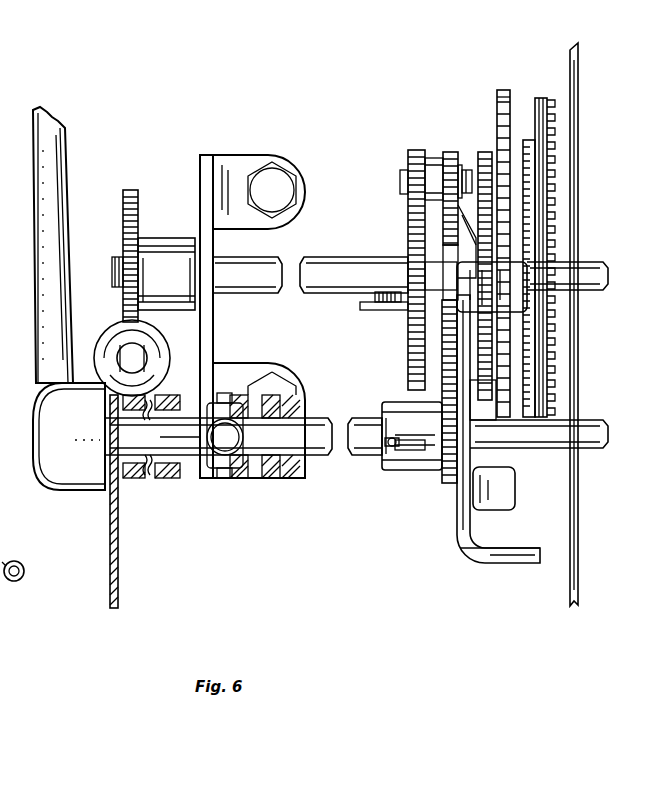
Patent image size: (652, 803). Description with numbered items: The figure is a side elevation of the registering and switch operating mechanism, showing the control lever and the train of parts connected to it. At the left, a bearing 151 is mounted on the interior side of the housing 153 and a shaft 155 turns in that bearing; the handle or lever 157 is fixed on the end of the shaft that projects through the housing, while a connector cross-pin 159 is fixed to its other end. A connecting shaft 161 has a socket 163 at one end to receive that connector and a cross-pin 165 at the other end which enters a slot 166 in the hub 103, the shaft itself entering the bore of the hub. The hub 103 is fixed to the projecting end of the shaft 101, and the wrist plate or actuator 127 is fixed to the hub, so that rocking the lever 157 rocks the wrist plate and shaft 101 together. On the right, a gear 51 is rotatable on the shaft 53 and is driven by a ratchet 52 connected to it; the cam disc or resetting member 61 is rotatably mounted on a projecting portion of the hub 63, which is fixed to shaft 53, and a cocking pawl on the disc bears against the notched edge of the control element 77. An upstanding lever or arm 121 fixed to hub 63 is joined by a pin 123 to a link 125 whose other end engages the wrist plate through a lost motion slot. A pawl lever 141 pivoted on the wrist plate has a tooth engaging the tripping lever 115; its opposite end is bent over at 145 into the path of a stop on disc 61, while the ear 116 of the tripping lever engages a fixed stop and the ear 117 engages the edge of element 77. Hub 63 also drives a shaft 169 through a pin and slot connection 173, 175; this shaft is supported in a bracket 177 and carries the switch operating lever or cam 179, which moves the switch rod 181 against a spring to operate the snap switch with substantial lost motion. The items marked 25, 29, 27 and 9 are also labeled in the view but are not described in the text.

The handle or lever 157 is at (67, 184).
The switch operating lever or cam 179 is at (141, 205).
The bracket 177 is at (235, 155).
The switch rod 181 is at (130, 355).
The shaft 169 is at (273, 262).
The hub 63 is at (370, 262).
The slot 175 is at (375, 297).
The pin 173 is at (378, 310).
The pin 123 is at (404, 182).
The link 125 is at (408, 207).
The wrist plate or actuator 127 is at (435, 315).
The pawl lever 141 is at (441, 328).
The upstanding lever or arm 121 is at (465, 220).
The bent-over end of pawl lever 145 is at (530, 262).
The shaft 53 is at (580, 270).
The control element 77 is at (484, 146).
The cam disc or resetting member 61 is at (502, 81).
The gear 51 is at (556, 112).
The ratchet 52 is at (537, 158).
The frame plate 25 is at (572, 418).
The shaft 101 is at (584, 449).
The hub 103 is at (406, 402).
The connecting shaft 161 is at (350, 420).
The slot 166 is at (386, 447).
The cross-pin 165 is at (412, 466).
The tripping lever 115 is at (450, 518).
The ear 116 is at (495, 548).
The ear 117 is at (515, 495).
The bearing 151 is at (138, 478).
The shaft 155 is at (163, 478).
The cross-pin 159 is at (224, 480).
The socket 163 is at (250, 482).
The housing 153 is at (118, 580).
The member 29 is at (9, 347).
The member 27 is at (10, 370).
The member 9 is at (5, 437).